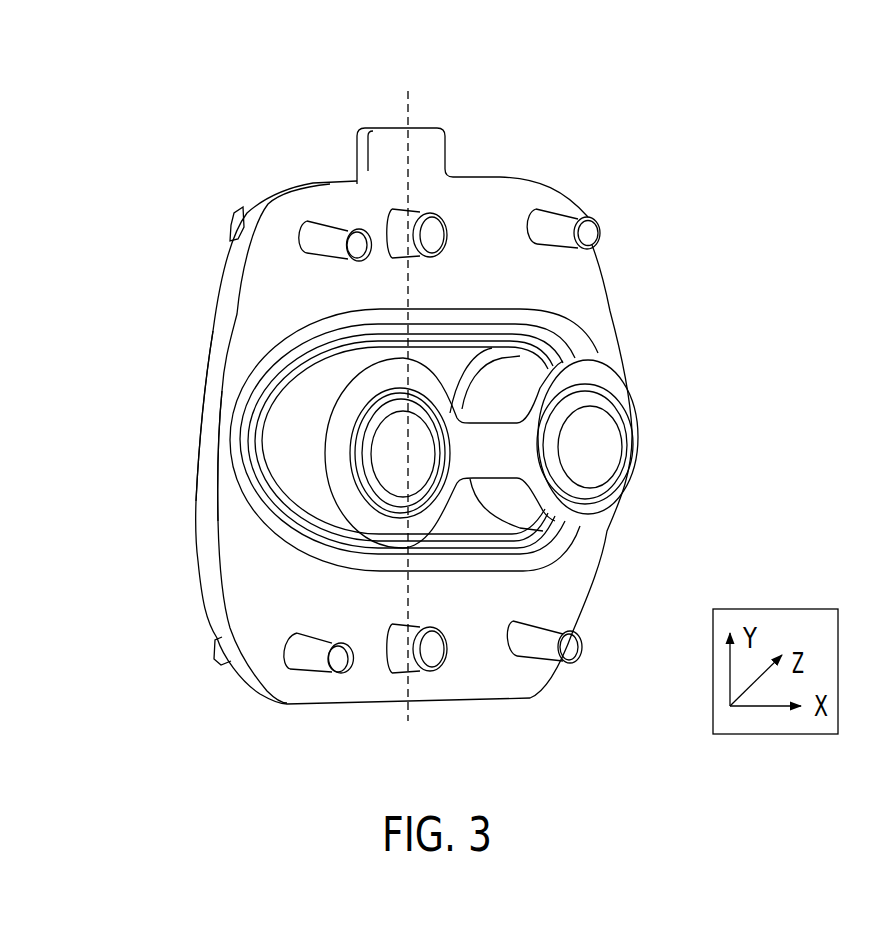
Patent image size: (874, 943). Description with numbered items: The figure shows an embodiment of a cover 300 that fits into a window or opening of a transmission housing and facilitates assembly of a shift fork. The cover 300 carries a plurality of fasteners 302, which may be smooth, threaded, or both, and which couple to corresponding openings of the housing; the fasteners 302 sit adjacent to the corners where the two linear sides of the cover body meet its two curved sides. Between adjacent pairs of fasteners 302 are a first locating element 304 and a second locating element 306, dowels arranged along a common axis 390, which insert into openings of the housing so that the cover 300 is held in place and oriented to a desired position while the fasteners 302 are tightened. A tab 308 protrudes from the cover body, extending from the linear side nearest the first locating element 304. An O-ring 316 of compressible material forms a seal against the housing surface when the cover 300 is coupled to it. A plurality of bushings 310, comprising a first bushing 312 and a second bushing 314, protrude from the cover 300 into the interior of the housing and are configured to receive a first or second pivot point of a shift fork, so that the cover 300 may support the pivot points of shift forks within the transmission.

The cover 300 is at (632, 76).
The plurality of fasteners 302 is at (592, 216).
The first locating element 304 is at (437, 213).
The second locating element 306 is at (438, 670).
The tab 308 is at (433, 126).
The plurality of bushings 310 is at (590, 549).
The first bushing 312 is at (370, 418).
The second bushing 314 is at (629, 413).
The O-ring 316 is at (222, 392).
The common axis 390 is at (402, 712).